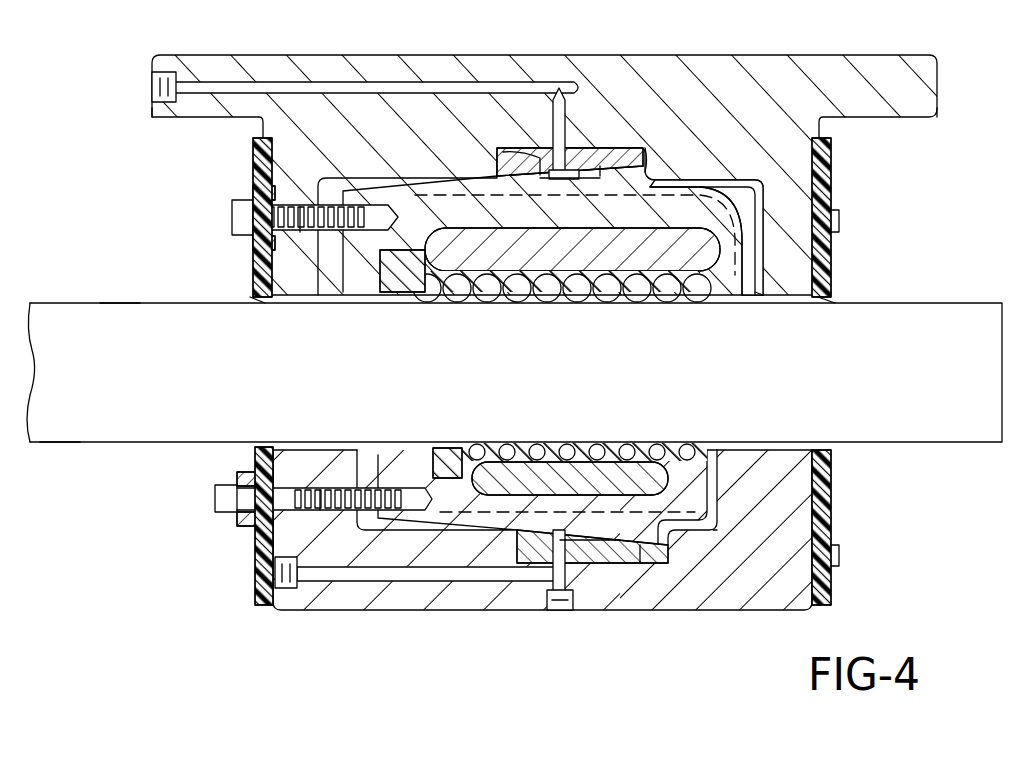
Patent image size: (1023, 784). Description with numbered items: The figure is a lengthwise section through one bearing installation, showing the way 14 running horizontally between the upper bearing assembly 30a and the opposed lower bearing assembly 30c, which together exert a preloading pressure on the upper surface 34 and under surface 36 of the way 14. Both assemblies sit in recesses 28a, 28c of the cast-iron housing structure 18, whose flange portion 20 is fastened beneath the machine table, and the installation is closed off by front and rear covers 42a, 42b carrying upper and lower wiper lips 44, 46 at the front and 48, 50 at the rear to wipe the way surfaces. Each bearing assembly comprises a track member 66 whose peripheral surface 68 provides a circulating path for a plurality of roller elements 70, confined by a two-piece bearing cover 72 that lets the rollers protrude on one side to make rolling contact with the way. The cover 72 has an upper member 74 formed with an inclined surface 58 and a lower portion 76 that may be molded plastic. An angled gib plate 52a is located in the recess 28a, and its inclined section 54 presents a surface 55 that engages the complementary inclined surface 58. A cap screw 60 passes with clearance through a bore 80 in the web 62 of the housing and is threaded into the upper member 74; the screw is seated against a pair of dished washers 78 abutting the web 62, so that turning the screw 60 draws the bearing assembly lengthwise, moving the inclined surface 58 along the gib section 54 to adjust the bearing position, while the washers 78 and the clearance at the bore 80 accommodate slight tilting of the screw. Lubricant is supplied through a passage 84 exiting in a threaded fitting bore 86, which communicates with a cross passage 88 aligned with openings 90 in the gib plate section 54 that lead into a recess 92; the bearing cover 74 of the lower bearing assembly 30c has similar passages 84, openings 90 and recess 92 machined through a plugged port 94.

The way 14 is at (152, 387).
The housing structure 18 is at (762, 588).
The flange portion 20 is at (150, 112).
The recess 28a is at (322, 290).
The recess 28c is at (357, 456).
The bearing assembly 30a is at (706, 180).
The bearing assembly 30c is at (712, 472).
The surface of the way 34 is at (120, 302).
The surface of the way 36 is at (55, 445).
The cover 42a is at (255, 146).
The cover 42b is at (834, 178).
The upper wiper lip 44 is at (258, 298).
The lower wiper lip 46 is at (255, 450).
The upper wiper lip 48 is at (838, 298).
The lower wiper lip 50 is at (834, 452).
The angled gib plate 52a is at (642, 160).
The inclined section 54 is at (602, 148).
The surface of the inclined section 55 is at (545, 150).
The inclined surface 58 is at (540, 162).
The cap screw 60 is at (232, 216).
The web 62 is at (310, 170).
The track member 66 is at (667, 260).
The peripheral surface 68 is at (522, 302).
The roller elements 70 is at (668, 302).
The bearing cover 72 is at (432, 190).
The upper member 74 is at (380, 292).
The lower portion 76 is at (748, 292).
The dished washers 78 is at (255, 193).
The bore 80 is at (299, 225).
The lubricant passage 84 is at (315, 78).
The threaded fitting bore 86 is at (150, 80).
The cross passage 88 is at (553, 95).
The openings 90 is at (575, 170).
The recess 92 is at (565, 178).
The plugged port 94 is at (566, 608).